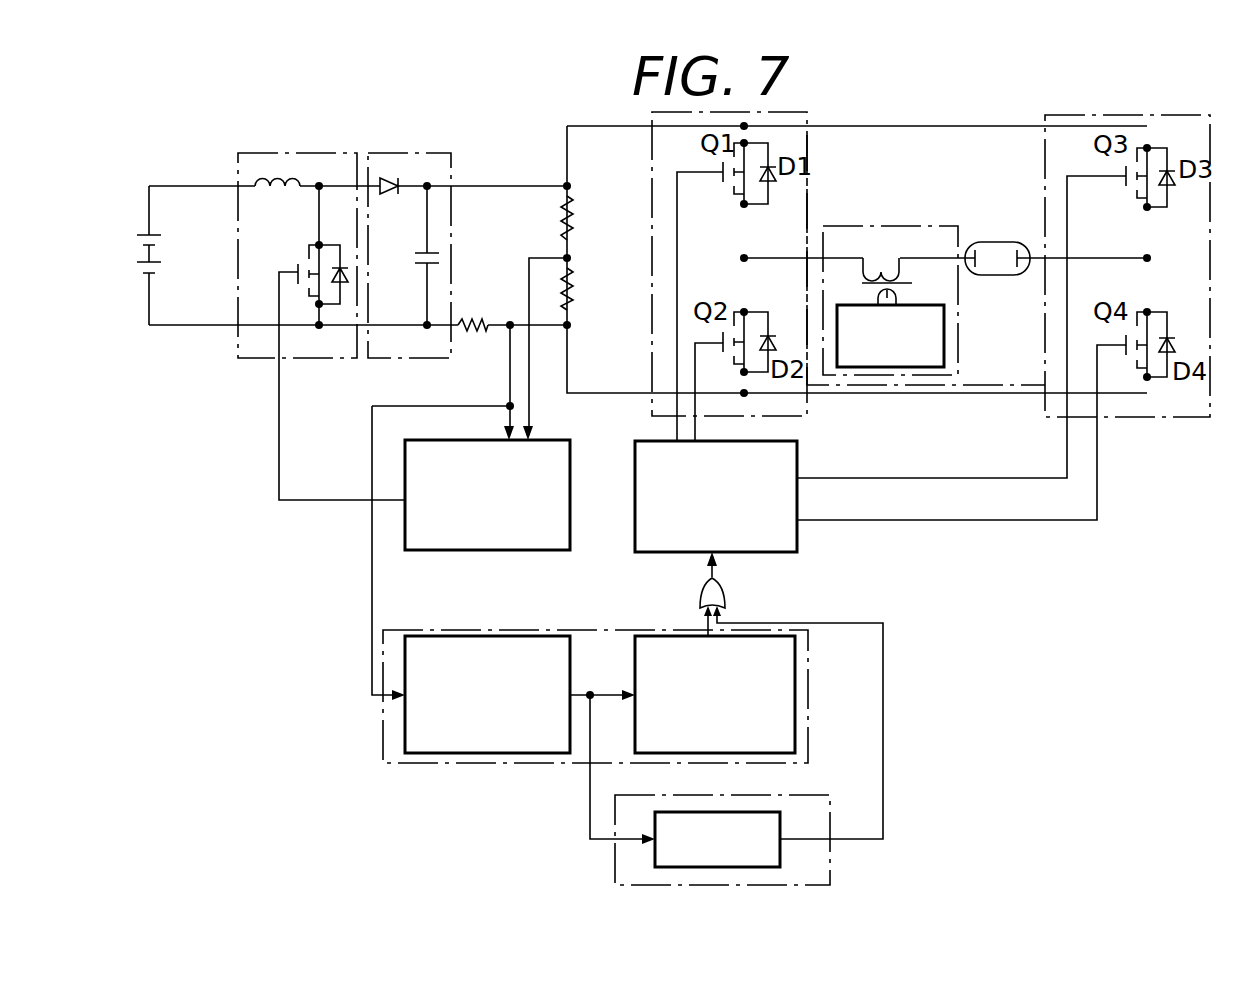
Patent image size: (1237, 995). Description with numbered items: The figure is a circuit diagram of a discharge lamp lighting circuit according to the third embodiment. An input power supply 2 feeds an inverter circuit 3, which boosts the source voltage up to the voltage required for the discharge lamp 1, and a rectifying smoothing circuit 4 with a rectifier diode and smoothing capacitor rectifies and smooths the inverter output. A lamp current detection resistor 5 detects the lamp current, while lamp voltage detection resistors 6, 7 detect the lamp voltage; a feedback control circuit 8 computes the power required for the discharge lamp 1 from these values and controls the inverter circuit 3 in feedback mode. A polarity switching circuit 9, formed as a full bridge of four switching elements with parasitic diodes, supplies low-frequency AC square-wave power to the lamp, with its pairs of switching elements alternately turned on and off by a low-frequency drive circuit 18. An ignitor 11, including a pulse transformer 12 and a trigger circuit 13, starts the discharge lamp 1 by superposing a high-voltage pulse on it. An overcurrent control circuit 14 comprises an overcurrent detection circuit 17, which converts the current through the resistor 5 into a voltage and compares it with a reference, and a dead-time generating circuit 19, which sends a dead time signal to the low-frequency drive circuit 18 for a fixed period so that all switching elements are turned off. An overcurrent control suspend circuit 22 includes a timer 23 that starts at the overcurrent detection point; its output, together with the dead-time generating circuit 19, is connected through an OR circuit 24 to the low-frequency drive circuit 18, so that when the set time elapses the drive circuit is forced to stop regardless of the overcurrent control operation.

The discharge lamp 1 is at (995, 243).
The input power supply 2 is at (164, 254).
The inverter circuit 3 is at (322, 153).
The rectifying smoothing circuit 4 is at (418, 153).
The lamp current detection resistor 5 is at (475, 312).
The lamp voltage detection resistor 6 is at (578, 228).
The lamp voltage detection resistor 7 is at (575, 293).
The feedback control circuit 8 is at (572, 470).
The polarity switching circuit 9 is at (1168, 420).
The ignitor 11 is at (913, 226).
The pulse transformer 12 is at (873, 268).
The trigger circuit 13 is at (945, 328).
The overcurrent control circuit 14 is at (413, 628).
The overcurrent detection circuit 17 is at (572, 666).
The low-frequency drive circuit 18 is at (800, 462).
The dead-time generating circuit 19 is at (798, 666).
The overcurrent control suspend circuit 22 is at (796, 797).
The timer 23 is at (783, 832).
The OR circuit 24 is at (727, 598).